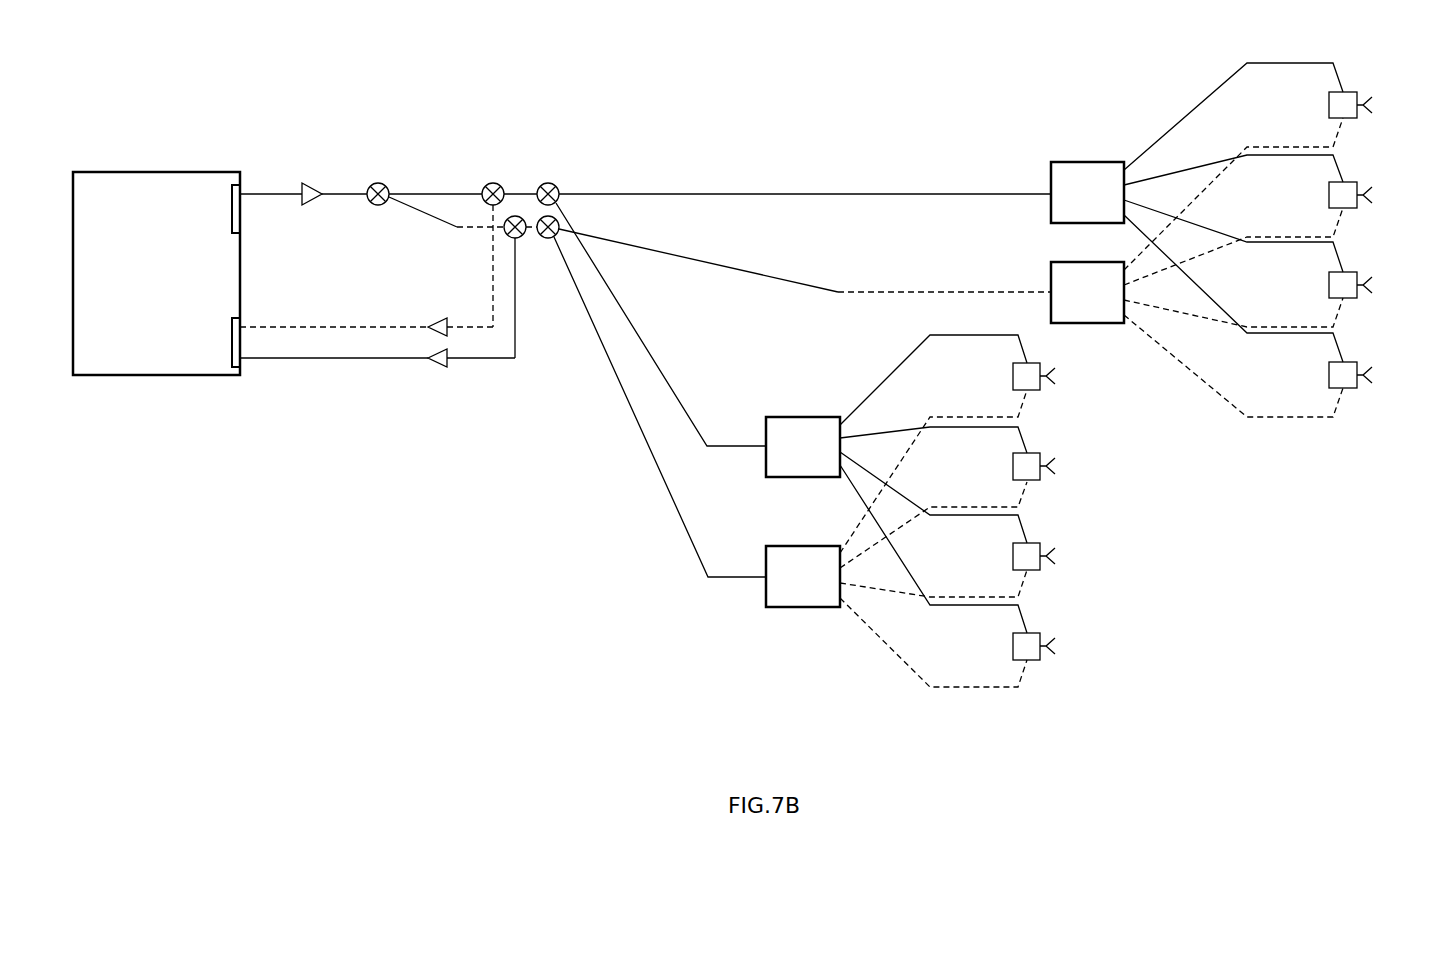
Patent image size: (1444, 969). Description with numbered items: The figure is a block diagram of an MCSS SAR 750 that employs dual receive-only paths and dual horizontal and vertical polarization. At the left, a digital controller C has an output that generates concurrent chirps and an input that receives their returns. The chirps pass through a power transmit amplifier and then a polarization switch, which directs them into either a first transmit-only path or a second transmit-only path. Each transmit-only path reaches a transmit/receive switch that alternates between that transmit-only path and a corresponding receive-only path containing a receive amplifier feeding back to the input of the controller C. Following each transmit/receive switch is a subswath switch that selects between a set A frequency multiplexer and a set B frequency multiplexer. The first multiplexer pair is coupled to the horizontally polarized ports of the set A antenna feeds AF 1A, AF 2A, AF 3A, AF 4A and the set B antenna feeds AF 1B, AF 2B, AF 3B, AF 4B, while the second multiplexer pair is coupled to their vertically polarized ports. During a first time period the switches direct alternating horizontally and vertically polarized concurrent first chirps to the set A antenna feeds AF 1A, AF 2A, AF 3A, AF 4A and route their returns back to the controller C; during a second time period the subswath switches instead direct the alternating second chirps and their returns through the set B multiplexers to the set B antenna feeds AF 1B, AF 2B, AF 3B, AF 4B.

The digital controller C is at (165, 317).
The MCSS SAR 750 is at (876, 88).
The set A antenna feed AF 1A is at (1347, 91).
The set A antenna feed AF 2A is at (1347, 181).
The set A antenna feed AF 3A is at (1347, 271).
The set A antenna feed AF 4A is at (1347, 361).
The set B antenna feed AF 1B is at (1031, 363).
The set B antenna feed AF 2B is at (1031, 453).
The set B antenna feed AF 3B is at (1031, 543).
The set B antenna feed AF 4B is at (1031, 633).